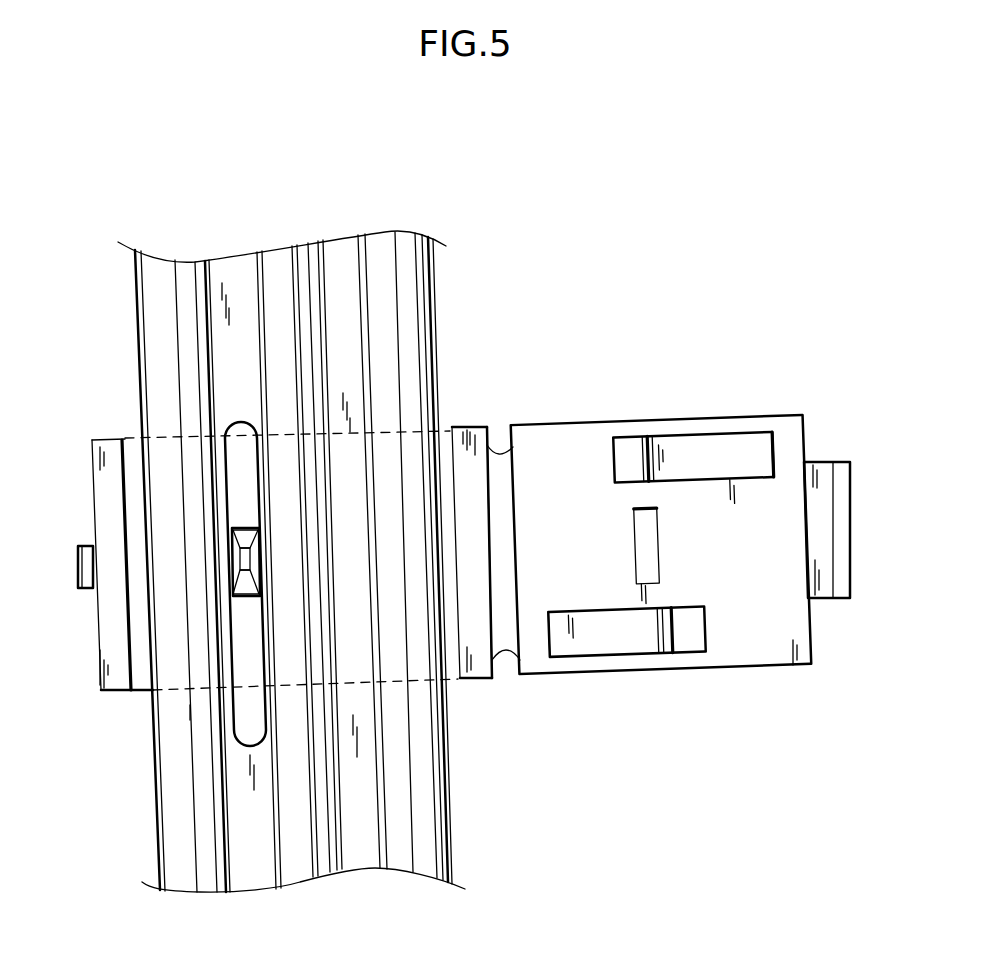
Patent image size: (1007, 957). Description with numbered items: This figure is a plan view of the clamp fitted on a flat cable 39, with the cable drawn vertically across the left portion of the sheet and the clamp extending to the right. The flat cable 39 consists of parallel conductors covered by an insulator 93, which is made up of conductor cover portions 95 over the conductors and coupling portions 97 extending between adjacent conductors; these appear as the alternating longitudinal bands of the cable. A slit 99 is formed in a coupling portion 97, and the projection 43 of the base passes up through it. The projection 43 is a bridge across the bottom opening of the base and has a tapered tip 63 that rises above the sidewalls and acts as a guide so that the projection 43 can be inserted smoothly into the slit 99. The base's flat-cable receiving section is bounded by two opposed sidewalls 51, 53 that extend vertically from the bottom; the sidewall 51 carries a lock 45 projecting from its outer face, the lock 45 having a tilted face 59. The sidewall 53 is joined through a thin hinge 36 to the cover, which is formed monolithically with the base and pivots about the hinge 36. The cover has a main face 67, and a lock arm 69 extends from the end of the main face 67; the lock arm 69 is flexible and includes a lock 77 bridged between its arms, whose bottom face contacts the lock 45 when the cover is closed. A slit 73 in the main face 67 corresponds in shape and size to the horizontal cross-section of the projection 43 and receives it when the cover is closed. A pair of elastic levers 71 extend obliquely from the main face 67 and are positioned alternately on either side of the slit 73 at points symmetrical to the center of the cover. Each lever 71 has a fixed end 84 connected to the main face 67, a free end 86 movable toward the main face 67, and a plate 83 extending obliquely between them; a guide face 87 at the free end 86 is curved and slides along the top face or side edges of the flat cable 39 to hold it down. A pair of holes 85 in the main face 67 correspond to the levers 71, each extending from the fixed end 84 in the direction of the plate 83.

The flat cable 39 is at (503, 163).
The insulator 93 is at (449, 312).
The conductor cover portions 95 is at (288, 272).
The coupling portions 97 is at (232, 273).
The slit 99 is at (252, 718).
The tapered tip 63 is at (248, 527).
The projection 43 is at (272, 554).
The lock 45 is at (71, 599).
The sidewall 51 is at (102, 476).
The tilted face 59 is at (88, 567).
The sidewall 53 is at (468, 450).
The hinge 36 is at (503, 492).
The main face 67 is at (810, 646).
The elastic levers 71 is at (685, 421).
The plate 83 is at (753, 463).
The fixed end 84 is at (776, 455).
The holes 85 is at (708, 645).
The free end 86 is at (650, 458).
The guide face 87 is at (640, 468).
The slit 73 is at (650, 530).
The lock 77 is at (825, 480).
The lock arm 69 is at (859, 512).